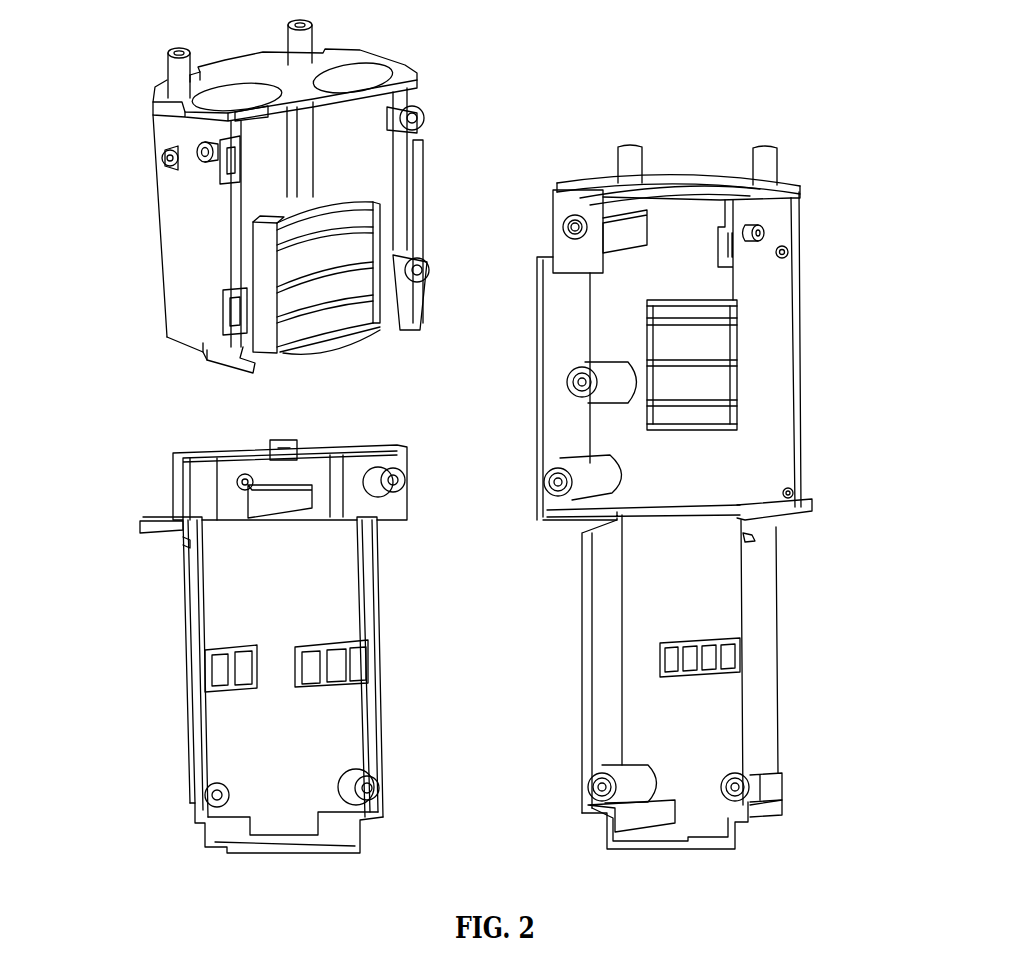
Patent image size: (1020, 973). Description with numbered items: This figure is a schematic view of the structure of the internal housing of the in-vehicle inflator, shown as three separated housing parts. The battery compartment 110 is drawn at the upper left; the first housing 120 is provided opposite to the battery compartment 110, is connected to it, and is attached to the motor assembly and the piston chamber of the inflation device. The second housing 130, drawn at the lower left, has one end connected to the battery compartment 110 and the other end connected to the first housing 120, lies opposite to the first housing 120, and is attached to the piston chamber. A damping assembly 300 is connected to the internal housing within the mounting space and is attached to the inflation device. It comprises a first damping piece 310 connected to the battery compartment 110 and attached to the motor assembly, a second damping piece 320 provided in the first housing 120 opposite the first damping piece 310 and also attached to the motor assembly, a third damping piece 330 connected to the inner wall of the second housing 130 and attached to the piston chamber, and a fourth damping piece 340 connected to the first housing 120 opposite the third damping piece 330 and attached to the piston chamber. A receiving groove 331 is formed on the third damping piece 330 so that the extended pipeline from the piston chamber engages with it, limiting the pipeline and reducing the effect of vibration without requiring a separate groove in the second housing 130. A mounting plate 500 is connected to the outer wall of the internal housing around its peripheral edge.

The battery compartment 110 is at (370, 118).
The first housing 120 is at (665, 213).
The second housing 130 is at (230, 560).
The damping assembly 300 is at (883, 225).
The first damping piece 310 is at (398, 261).
The second damping piece 320 is at (697, 360).
The third damping piece 330 is at (323, 669).
The receiving groove 331 is at (267, 668).
The fourth damping piece 340 is at (717, 643).
The mounting plate 500 is at (152, 520).